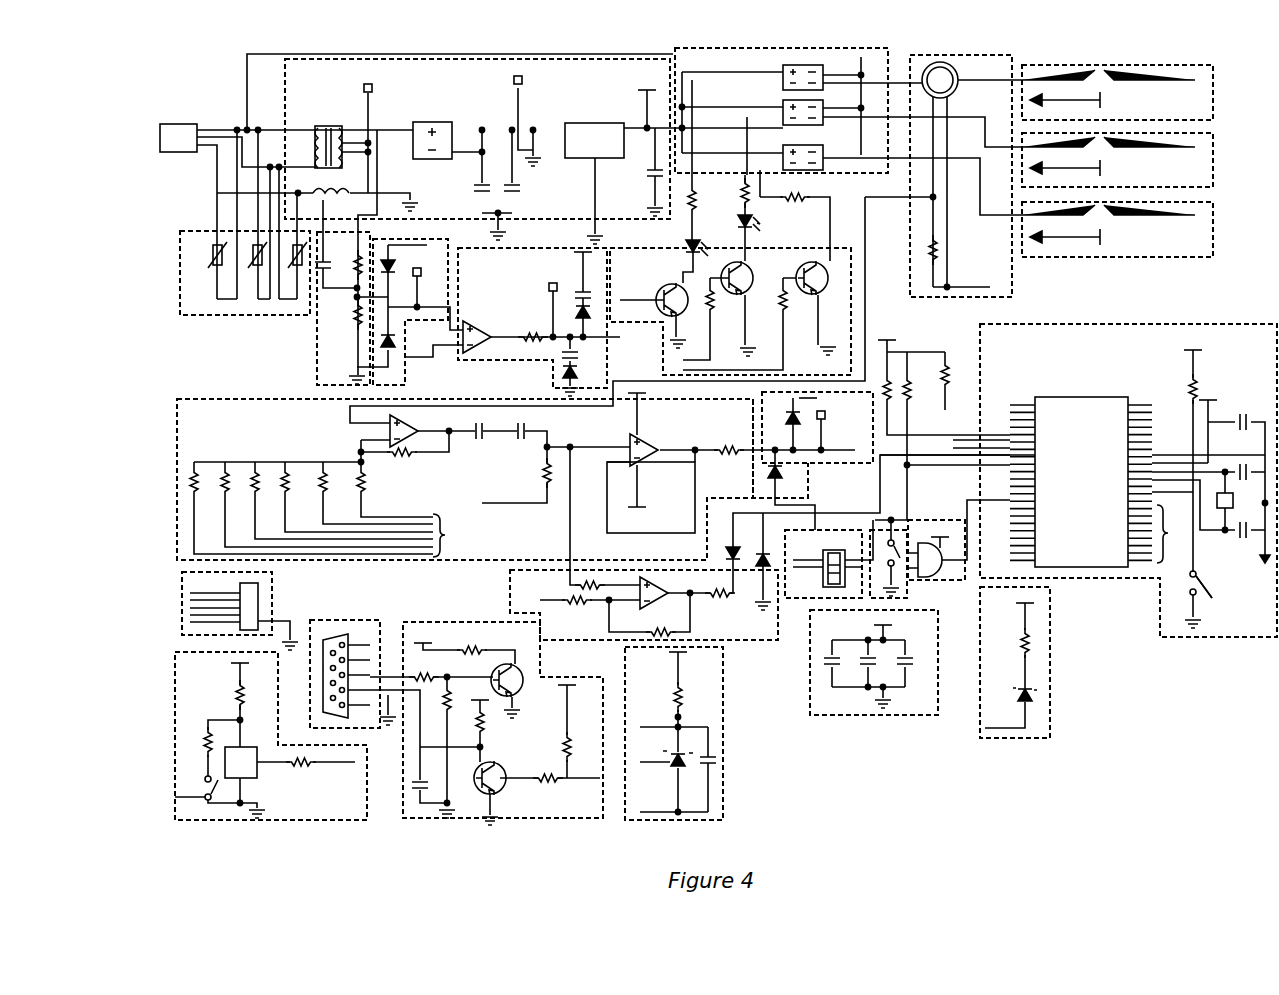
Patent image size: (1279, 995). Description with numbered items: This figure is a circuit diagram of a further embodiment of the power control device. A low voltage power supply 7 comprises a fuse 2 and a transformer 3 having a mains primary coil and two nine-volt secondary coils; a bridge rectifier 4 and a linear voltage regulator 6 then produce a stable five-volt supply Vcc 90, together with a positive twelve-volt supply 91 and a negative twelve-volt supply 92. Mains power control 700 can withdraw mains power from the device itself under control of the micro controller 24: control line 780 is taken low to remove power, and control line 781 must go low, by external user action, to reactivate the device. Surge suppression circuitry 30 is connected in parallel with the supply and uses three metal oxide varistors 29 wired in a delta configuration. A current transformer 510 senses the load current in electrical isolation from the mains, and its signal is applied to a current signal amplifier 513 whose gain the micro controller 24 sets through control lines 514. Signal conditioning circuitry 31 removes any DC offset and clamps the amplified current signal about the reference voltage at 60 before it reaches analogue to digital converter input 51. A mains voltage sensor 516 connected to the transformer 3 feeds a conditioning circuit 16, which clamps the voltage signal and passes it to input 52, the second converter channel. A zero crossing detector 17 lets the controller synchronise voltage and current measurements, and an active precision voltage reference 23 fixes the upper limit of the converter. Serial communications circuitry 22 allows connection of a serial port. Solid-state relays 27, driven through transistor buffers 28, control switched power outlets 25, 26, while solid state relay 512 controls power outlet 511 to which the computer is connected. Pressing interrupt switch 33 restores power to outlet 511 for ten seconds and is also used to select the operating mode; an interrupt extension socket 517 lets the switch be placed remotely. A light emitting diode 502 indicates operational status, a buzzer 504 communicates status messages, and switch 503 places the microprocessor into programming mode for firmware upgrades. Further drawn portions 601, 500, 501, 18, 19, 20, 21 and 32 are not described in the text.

The power supply line 601 is at (266, 56).
The low voltage power supply 7 is at (282, 110).
The mains power control 700 is at (183, 124).
The fuse 2 is at (318, 130).
The transformer 3 is at (335, 126).
The bridge rectifier 4 is at (428, 122).
The linear voltage regulator 6 is at (578, 123).
The +12V supply 91 is at (533, 110).
The five-volt DC power supply Vcc 90 is at (646, 88).
The solid state relay 512 is at (806, 56).
The current transformer 510 is at (945, 75).
The power outlet 511 is at (1213, 88).
The switched power outlet 26 is at (1213, 158).
The switched power outlet 25 is at (1213, 228).
The solid-state relays 27 is at (866, 180).
The micro controller 24 is at (1100, 324).
The surge suppression circuitry 30 is at (205, 316).
The metal oxide varistors 29 is at (211, 250).
The mains voltage sensor 516 is at (318, 368).
The conditioning circuit 16 is at (405, 372).
The input of the micro controller 52 is at (446, 305).
The zero crossing detector 17 is at (553, 360).
The transistor buffers 28 is at (663, 350).
The current signal amplifier 513 is at (272, 398).
The control lines 514 is at (440, 535).
The −12V supply 92 is at (640, 507).
The reference voltage VAref point 60 is at (790, 398).
The analogue to digital converter input 51 is at (838, 450).
The signal conditioning circuitry 31 is at (808, 468).
The comparator circuit 500 is at (511, 605).
The serial communications circuitry 22 is at (472, 622).
The active precision voltage reference 23 is at (723, 765).
The serial connector 21 is at (323, 620).
The connector 32 is at (273, 598).
The relay control circuit 18 is at (367, 818).
The relay 19 is at (262, 778).
The switch 20 is at (204, 797).
The interrupt extension socket 517 is at (797, 600).
The interrupt switch 33 is at (905, 588).
The buzzer 504 is at (965, 580).
The capacitor bank 501 is at (848, 716).
The light emitting diode 502 is at (1050, 672).
The control line 780 is at (1020, 405).
The control line 781 is at (1012, 408).
The switch 503 is at (1215, 600).